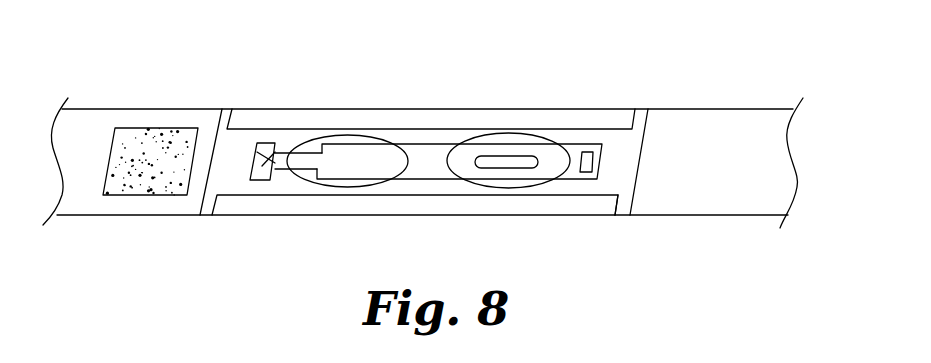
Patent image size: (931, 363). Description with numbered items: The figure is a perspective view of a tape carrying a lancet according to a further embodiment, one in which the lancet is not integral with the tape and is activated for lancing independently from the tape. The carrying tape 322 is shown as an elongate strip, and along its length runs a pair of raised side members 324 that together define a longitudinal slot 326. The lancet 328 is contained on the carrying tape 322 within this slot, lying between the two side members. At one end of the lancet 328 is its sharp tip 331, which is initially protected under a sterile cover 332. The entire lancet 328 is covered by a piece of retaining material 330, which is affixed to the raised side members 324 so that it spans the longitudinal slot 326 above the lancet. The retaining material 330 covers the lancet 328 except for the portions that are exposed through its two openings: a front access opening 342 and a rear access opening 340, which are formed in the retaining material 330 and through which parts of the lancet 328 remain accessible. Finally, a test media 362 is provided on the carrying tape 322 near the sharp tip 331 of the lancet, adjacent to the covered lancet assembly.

The carrying tape 322 is at (740, 128).
The raised side members 324 is at (503, 118).
The longitudinal slot 326 is at (612, 182).
The lancet 328 is at (428, 160).
The retaining material 330 is at (640, 163).
The sharp tip 331 is at (257, 153).
The sterile cover 332 is at (252, 176).
The rear access opening 340 is at (462, 167).
The front access opening 342 is at (332, 180).
The test media 362 is at (163, 133).